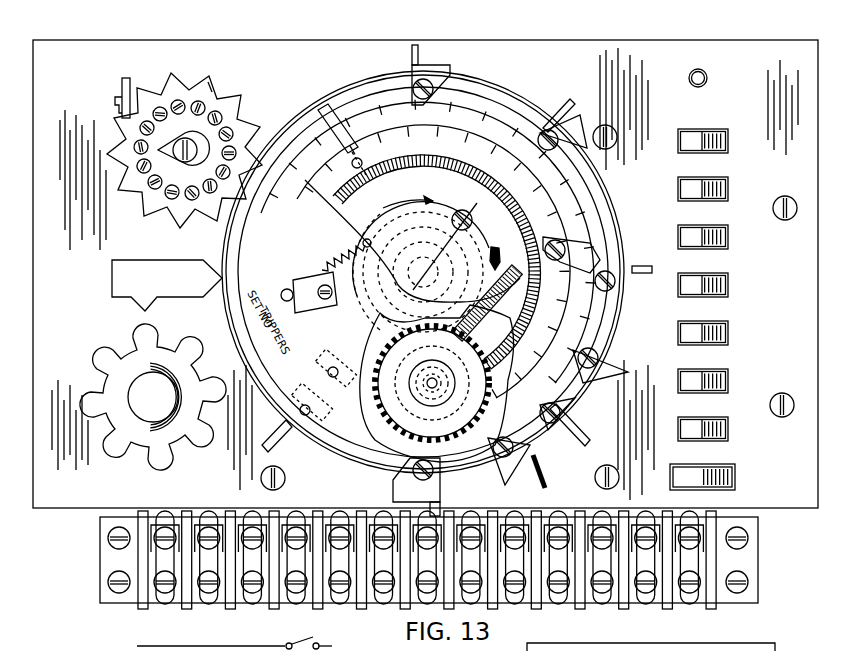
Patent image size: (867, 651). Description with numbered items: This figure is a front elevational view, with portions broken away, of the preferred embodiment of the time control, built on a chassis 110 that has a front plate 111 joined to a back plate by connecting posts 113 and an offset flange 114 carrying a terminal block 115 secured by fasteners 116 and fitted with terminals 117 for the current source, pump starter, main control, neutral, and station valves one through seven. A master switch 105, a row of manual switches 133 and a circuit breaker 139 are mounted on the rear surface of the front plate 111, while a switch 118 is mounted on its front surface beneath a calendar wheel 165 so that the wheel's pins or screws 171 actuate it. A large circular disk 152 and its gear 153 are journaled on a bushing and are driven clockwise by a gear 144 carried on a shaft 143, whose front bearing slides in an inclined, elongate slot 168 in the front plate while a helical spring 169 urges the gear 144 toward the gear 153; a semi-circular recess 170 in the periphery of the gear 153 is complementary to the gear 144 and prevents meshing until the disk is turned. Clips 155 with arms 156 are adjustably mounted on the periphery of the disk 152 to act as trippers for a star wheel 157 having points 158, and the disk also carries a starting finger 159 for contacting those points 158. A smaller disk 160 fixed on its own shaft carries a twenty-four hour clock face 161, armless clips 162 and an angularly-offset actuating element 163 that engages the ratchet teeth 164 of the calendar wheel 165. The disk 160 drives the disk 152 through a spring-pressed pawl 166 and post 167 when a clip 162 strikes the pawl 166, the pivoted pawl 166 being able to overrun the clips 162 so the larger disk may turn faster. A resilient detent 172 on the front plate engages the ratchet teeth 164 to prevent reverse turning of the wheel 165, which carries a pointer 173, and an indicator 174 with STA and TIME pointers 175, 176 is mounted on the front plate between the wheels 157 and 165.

The master switch 105 is at (737, 478).
The chassis 110 is at (618, 40).
The front plate 111 is at (218, 40).
The connecting posts 113 is at (786, 221).
The offset flange 114 is at (100, 555).
The terminal block 115 is at (748, 554).
The fasteners 116 is at (104, 592).
The terminals 117 is at (690, 597).
The switch 118 is at (150, 92).
The manual switches 133 is at (724, 190).
The circuit breaker 139 is at (706, 80).
The shaft 143 is at (427, 385).
The gear 144 is at (496, 383).
The circular dial or disk 152 is at (498, 94).
The gear 153 is at (385, 318).
The actuating elements or clips 155 is at (566, 443).
The arms 156 is at (651, 265).
The star wheel 157 is at (214, 473).
The points or teeth 158 is at (128, 460).
The starting finger 159 is at (278, 448).
The circular dial or disk 160 is at (586, 199).
The dial plate or clock face 161 is at (419, 166).
The armless actuating elements or clips 162 is at (603, 227).
The angularly-offset actuating element 163 is at (342, 109).
The ratchet teeth 164 is at (113, 146).
The calendar wheel 165 is at (273, 110).
The spring-pressed pawl 166 is at (320, 309).
The post 167 is at (306, 280).
The inclined, elongate opening or slot 168 is at (423, 413).
The helical spring 169 is at (446, 384).
The semi-circular recess or cutaway portion 170 is at (432, 383).
The pins or screws 171 is at (228, 140).
The resilient detent 172 is at (213, 88).
The pointer 173 is at (118, 184).
The indicator 174 is at (105, 262).
The STA pointer 175 is at (131, 300).
The TIME pointer 176 is at (209, 260).